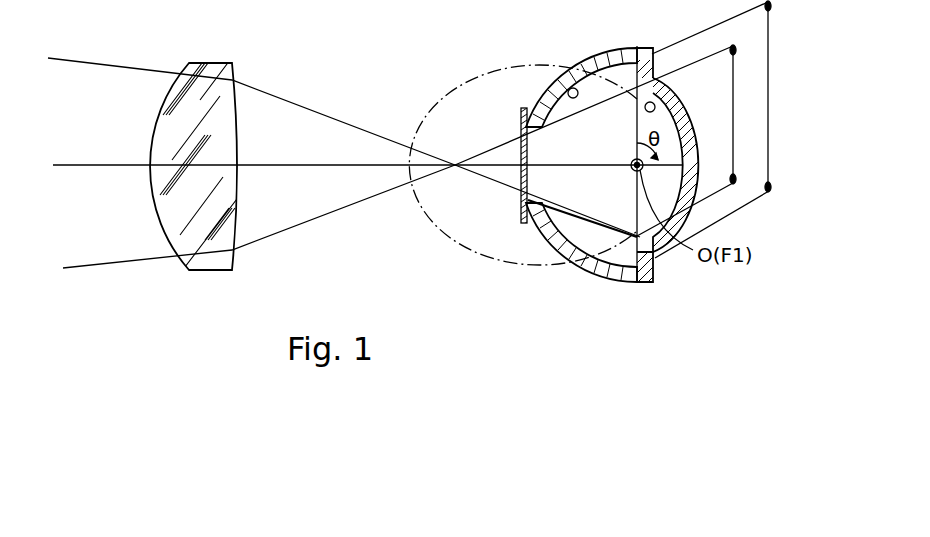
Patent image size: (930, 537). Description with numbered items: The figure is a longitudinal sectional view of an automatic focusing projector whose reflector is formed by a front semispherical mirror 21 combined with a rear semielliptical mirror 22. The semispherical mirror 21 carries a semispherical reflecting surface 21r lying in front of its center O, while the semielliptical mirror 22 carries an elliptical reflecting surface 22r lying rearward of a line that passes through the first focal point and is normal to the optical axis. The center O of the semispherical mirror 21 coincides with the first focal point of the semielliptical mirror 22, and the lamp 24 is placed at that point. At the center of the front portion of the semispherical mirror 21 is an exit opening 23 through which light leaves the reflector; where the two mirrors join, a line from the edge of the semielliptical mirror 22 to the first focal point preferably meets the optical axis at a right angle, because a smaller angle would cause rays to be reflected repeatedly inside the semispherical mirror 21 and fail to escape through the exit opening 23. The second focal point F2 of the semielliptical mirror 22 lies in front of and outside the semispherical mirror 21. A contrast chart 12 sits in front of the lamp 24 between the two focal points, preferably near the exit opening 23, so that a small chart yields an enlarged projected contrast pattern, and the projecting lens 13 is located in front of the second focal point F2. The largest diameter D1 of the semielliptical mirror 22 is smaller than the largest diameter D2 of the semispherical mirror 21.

The contrast chart 12 is at (520, 137).
The projecting lens 13 is at (232, 264).
The semispherical mirror 21 is at (603, 52).
The semispherical reflecting surface 21r is at (572, 88).
The semielliptical mirror 22 is at (682, 118).
The elliptical reflecting surface 22r is at (652, 101).
The exit opening 23 is at (535, 202).
The lamp 24 is at (523, 165).
The second focal point F2 is at (455, 170).
The largest diameter of the semielliptical mirror D1 is at (732, 114).
The largest diameter of the semispherical mirror D2 is at (771, 96).